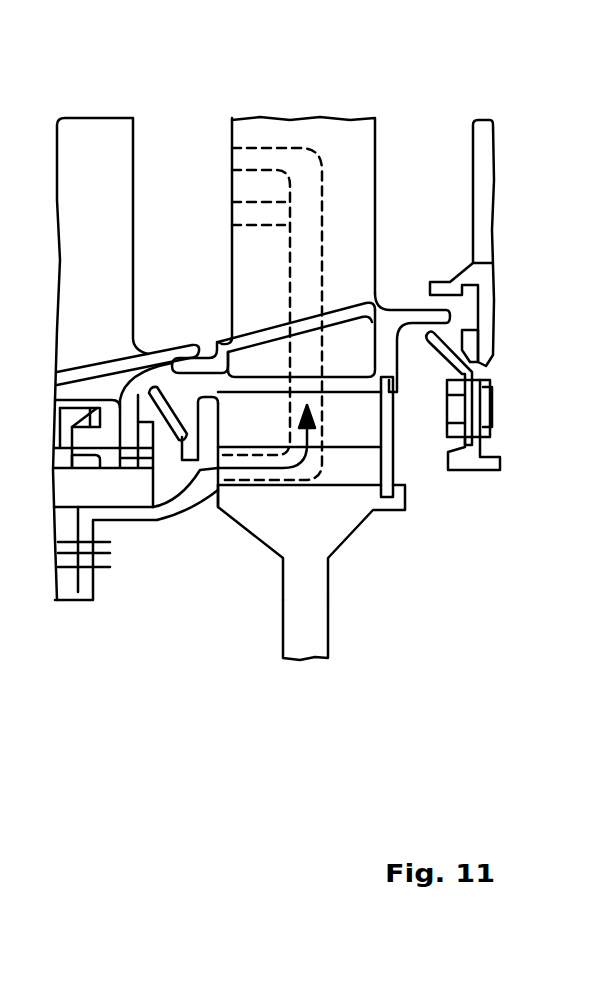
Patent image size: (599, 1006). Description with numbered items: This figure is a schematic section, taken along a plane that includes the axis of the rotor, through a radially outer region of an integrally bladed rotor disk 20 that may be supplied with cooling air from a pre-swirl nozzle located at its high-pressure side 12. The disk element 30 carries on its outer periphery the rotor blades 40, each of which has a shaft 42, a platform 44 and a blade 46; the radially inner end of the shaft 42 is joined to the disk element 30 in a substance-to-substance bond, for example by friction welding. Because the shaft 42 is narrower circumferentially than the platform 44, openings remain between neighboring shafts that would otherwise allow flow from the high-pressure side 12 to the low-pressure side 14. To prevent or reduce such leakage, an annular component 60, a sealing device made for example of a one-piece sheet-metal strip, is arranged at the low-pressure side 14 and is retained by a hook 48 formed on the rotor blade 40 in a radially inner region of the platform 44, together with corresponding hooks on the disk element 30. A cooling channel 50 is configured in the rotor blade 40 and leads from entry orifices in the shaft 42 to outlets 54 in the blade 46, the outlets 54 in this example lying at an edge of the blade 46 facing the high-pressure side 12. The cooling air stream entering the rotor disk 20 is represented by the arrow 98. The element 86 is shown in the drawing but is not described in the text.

The high-pressure side 12 is at (207, 435).
The low-pressure side 14 is at (435, 445).
The integrally bladed rotor disk 20 is at (320, 512).
The disk element 30 is at (308, 640).
The rotor blade 40 is at (343, 146).
The shaft 42 is at (237, 410).
The platform 44 is at (263, 327).
The blade 46 is at (267, 265).
The hook 48 is at (392, 392).
The cooling channel 50 is at (310, 283).
The outlet 54 is at (233, 157).
The annular component 60 is at (395, 460).
The hook 86 is at (175, 505).
The arrow 98 is at (250, 472).